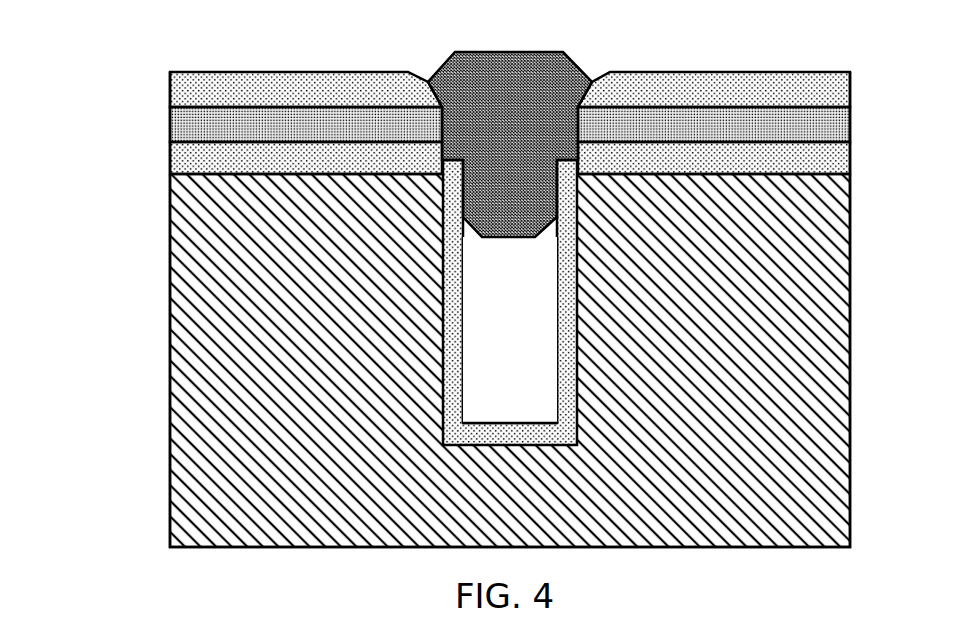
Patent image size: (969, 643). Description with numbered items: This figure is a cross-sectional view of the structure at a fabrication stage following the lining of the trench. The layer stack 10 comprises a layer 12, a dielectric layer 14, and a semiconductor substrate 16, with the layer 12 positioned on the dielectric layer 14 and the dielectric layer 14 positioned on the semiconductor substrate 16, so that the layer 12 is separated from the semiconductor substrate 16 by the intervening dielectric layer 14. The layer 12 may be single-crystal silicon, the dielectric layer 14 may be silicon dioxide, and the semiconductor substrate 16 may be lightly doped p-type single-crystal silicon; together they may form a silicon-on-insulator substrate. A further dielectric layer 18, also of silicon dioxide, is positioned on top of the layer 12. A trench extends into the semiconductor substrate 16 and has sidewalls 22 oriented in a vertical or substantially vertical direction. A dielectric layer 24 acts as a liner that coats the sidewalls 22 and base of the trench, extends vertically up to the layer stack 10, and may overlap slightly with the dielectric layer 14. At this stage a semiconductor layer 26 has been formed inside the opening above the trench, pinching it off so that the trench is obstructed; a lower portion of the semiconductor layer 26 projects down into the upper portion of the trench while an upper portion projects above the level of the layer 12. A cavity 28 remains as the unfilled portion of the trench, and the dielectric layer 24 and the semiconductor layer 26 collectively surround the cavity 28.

The layer stack 10 is at (131, 121).
The layer 12 is at (793, 123).
The dielectric layer 14 is at (797, 167).
The semiconductor substrate 16 is at (800, 480).
The dielectric layer 18 is at (797, 87).
The sidewalls 22 is at (575, 352).
The dielectric layer 24 is at (567, 248).
The semiconductor layer 26 is at (498, 72).
The cavity 28 is at (523, 293).